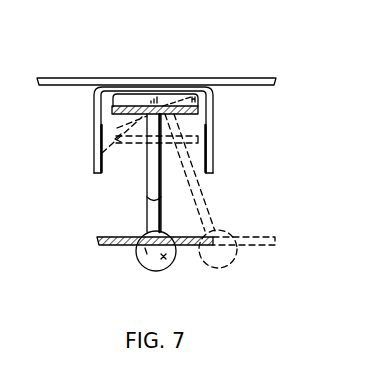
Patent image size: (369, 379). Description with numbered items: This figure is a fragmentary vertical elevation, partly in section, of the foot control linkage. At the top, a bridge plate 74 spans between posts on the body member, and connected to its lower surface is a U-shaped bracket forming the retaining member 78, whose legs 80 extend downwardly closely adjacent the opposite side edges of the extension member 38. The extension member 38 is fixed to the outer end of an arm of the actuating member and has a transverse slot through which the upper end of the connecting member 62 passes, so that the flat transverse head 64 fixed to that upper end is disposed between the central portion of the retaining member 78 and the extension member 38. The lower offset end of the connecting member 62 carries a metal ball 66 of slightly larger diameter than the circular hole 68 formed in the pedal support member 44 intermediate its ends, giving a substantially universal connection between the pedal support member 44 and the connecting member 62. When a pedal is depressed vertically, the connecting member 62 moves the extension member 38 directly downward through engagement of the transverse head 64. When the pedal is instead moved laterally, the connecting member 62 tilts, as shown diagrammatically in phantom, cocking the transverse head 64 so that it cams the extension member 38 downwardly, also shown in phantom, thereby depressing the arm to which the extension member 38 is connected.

The bridge plate 74 is at (82, 78).
The legs 80 is at (93, 135).
The transverse head 64 is at (139, 96).
The retaining member 78 is at (172, 93).
The extension member 38 is at (112, 109).
The connecting member 62 is at (146, 197).
The pedal support member 44 is at (97, 241).
The metal ball 66 is at (165, 258).
The circular hole 68 is at (146, 253).